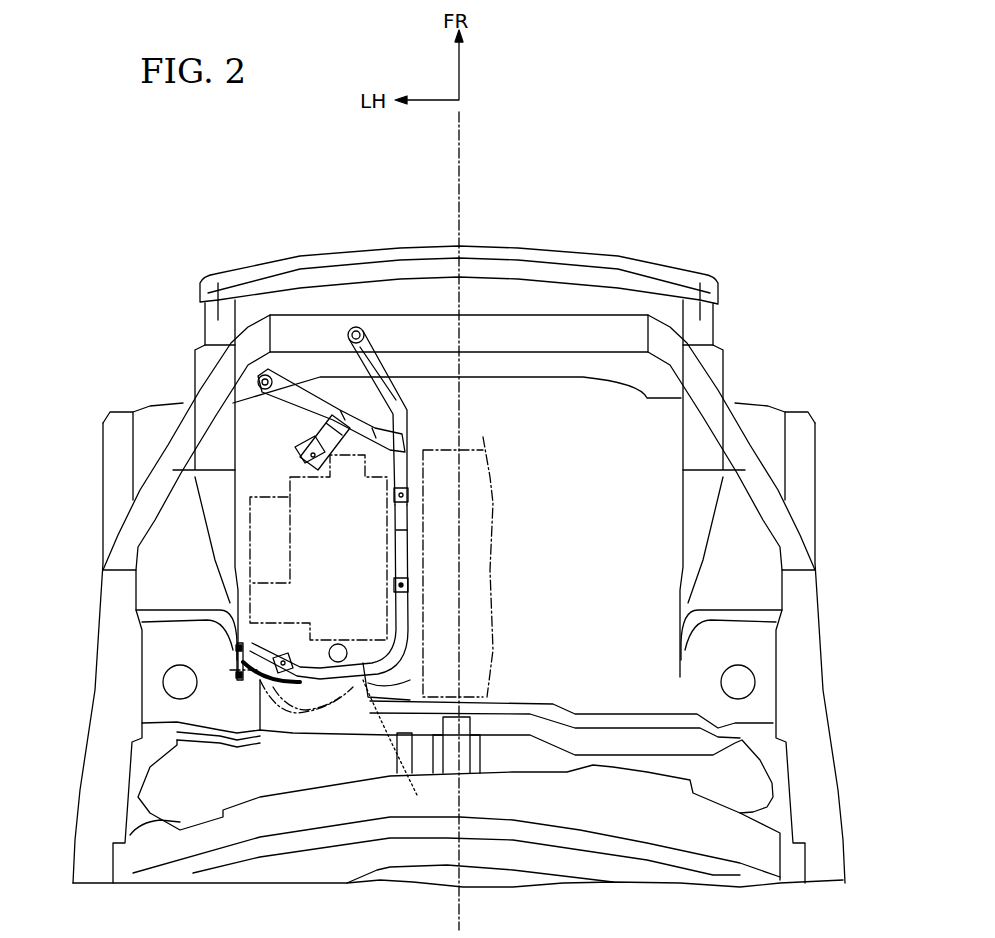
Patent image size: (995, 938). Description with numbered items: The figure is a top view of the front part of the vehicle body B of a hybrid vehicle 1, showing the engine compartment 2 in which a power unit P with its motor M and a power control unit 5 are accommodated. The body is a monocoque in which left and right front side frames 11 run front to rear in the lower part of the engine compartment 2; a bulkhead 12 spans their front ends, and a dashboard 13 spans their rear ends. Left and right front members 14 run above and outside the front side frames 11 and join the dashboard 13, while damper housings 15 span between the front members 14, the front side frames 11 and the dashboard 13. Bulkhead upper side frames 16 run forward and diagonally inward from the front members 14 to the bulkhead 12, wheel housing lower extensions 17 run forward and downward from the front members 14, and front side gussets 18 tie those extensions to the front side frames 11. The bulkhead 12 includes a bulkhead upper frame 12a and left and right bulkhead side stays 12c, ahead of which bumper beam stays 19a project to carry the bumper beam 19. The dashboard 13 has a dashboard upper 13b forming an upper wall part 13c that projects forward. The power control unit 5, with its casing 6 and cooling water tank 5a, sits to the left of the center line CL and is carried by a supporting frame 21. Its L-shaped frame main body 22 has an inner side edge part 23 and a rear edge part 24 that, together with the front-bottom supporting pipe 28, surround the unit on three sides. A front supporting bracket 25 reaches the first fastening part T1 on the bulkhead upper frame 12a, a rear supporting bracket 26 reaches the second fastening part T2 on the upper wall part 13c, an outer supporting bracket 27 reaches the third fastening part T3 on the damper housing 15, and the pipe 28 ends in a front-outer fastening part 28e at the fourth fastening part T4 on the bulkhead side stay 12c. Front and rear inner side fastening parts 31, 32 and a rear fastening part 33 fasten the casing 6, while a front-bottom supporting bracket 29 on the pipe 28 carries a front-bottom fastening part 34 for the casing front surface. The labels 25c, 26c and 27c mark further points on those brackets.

The hybrid vehicle 1 is at (625, 101).
The engine compartment 2 is at (533, 523).
The power control unit 5 is at (400, 627).
The cooling water tank 5a is at (404, 660).
The casing 6 is at (483, 635).
The front side frame 11 is at (217, 447).
The bulkhead 12 is at (459, 259).
The bulkhead upper frame 12a is at (540, 330).
The bulkhead side stay 12c is at (264, 332).
The dashboard 13 is at (566, 707).
The dashboard upper 13b is at (347, 730).
The upper wall part 13c is at (458, 808).
The front member 14 is at (103, 690).
The damper housing 15 is at (192, 637).
The bulkhead upper side frame 16 is at (173, 443).
The wheel housing lower extension 17 is at (103, 477).
The front side gusset 18 is at (167, 410).
The bumper beam 19 is at (483, 263).
The bumper beam stay 19a is at (217, 318).
The supporting frame 21 is at (405, 556).
The frame main body 22 is at (428, 592).
The inner side edge part 23 is at (407, 530).
The rear edge part 24 is at (358, 668).
The front supporting bracket 25 is at (380, 367).
The arm pivot portion 25c is at (342, 268).
The rear supporting bracket 26 is at (366, 700).
The lower mount fastening portion 26c is at (407, 748).
The outer supporting bracket 27 is at (237, 677).
The side bracket fastening portion 27c is at (134, 631).
The front-bottom supporting pipe 28 is at (320, 410).
The front-outer fastening part 28e is at (181, 330).
The front-bottom supporting bracket 29 is at (320, 438).
The front inner side fastening part 31 is at (412, 492).
The rear inner side fastening part 32 is at (404, 587).
The rear fastening part 33 is at (283, 660).
The front-bottom fastening part 34 is at (297, 455).
The vehicle body B is at (465, 259).
The motor M is at (390, 544).
The power unit P is at (422, 450).
The left-right center line CL is at (462, 138).
The first fastening part T1 is at (357, 326).
The second fastening part T2 is at (407, 748).
The third fastening part T3 is at (233, 657).
The fourth fastening part T4 is at (262, 381).